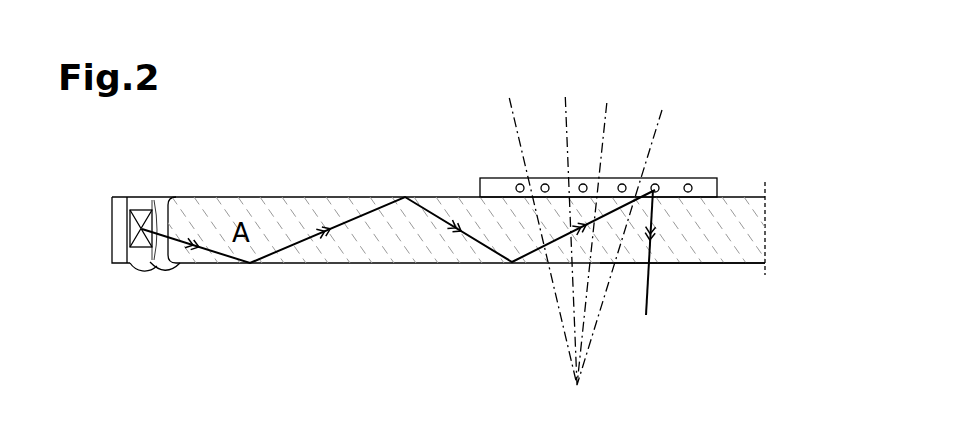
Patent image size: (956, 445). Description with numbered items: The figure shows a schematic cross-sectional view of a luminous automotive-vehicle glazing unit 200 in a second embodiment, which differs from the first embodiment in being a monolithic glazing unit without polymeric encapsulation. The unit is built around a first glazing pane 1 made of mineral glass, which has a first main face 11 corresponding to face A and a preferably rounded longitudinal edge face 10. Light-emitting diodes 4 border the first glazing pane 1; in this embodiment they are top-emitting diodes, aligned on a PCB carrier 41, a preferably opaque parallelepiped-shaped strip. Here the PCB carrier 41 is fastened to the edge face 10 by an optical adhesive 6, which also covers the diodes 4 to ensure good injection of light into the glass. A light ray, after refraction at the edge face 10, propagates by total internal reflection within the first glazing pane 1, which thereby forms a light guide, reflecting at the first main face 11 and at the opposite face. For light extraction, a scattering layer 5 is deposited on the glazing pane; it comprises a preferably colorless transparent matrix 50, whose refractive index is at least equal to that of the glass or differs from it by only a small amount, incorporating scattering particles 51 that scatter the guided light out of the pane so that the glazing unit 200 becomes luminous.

The optical sensing system 200 is at (261, 108).
The first glazing pane 1 is at (748, 232).
The first main face 11 is at (700, 264).
The PCB carrier 41 is at (118, 210).
The light-emitting diodes 4 is at (127, 228).
The optical adhesive 6 is at (138, 265).
The edge face 10 is at (152, 268).
The scattering layer 5 is at (494, 185).
The scattering particles 51 is at (688, 180).
The transparent matrix 50 is at (558, 178).